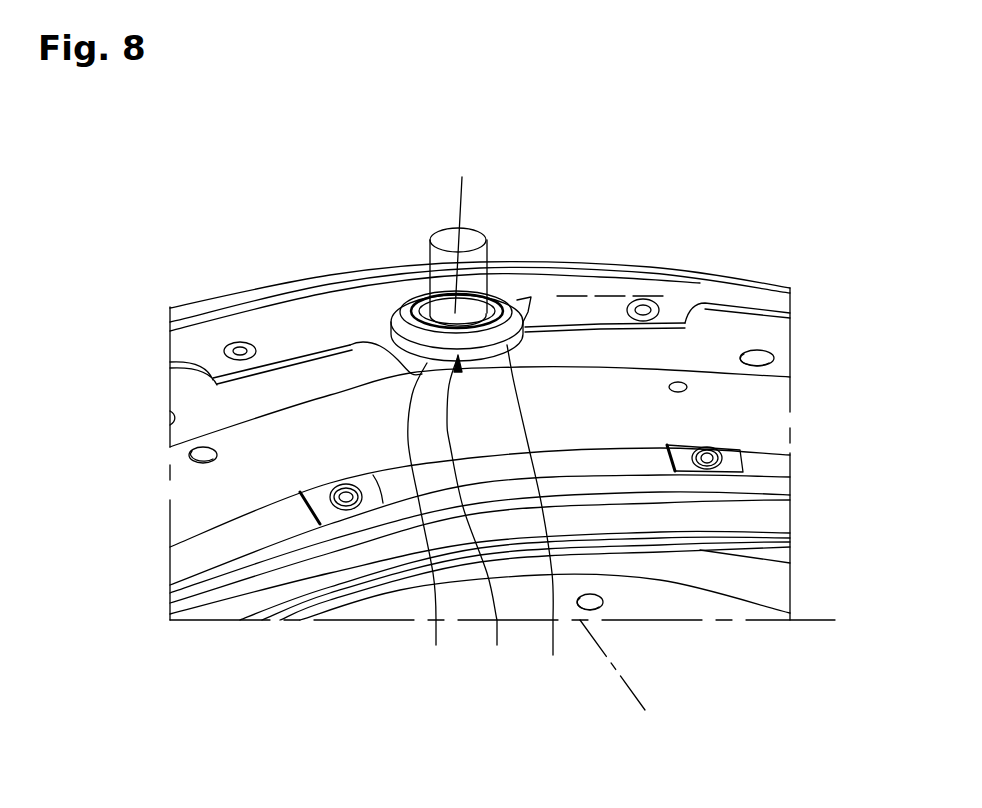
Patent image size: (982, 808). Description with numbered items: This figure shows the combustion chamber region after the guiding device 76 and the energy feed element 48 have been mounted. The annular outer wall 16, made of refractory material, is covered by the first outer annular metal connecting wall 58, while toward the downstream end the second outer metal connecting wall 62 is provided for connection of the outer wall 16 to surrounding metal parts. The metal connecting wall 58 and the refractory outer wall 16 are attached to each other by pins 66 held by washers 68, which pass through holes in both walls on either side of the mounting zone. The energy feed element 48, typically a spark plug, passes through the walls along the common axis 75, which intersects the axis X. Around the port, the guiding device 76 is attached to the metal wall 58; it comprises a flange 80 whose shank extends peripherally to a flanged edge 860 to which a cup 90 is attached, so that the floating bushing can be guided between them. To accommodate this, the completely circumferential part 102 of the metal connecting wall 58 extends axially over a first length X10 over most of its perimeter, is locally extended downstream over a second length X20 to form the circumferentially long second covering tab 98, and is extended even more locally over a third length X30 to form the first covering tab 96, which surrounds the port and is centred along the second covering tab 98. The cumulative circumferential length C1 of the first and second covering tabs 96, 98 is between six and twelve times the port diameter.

The annular outer wall 16 is at (793, 390).
The energy feed element 48 is at (480, 287).
The first outer annular metal connecting wall 58 is at (172, 343).
The second outer metal connecting wall 62 is at (160, 601).
The pins 66 is at (239, 345).
The washers 68 is at (658, 308).
The common axis 75 is at (458, 208).
The guiding device 76 is at (375, 293).
The flange 80 is at (479, 516).
The cup 90 is at (516, 320).
The first covering tab 96 is at (429, 520).
The second covering tab 98 is at (605, 307).
The part of the first metal connecting wall 102 is at (778, 307).
The flanged edge 860 is at (542, 514).
The cumulative circumferential length C1 is at (660, 257).
The first length X10 is at (772, 320).
The second length X20 is at (612, 345).
The third length X30 is at (362, 378).
The axis X is at (625, 677).